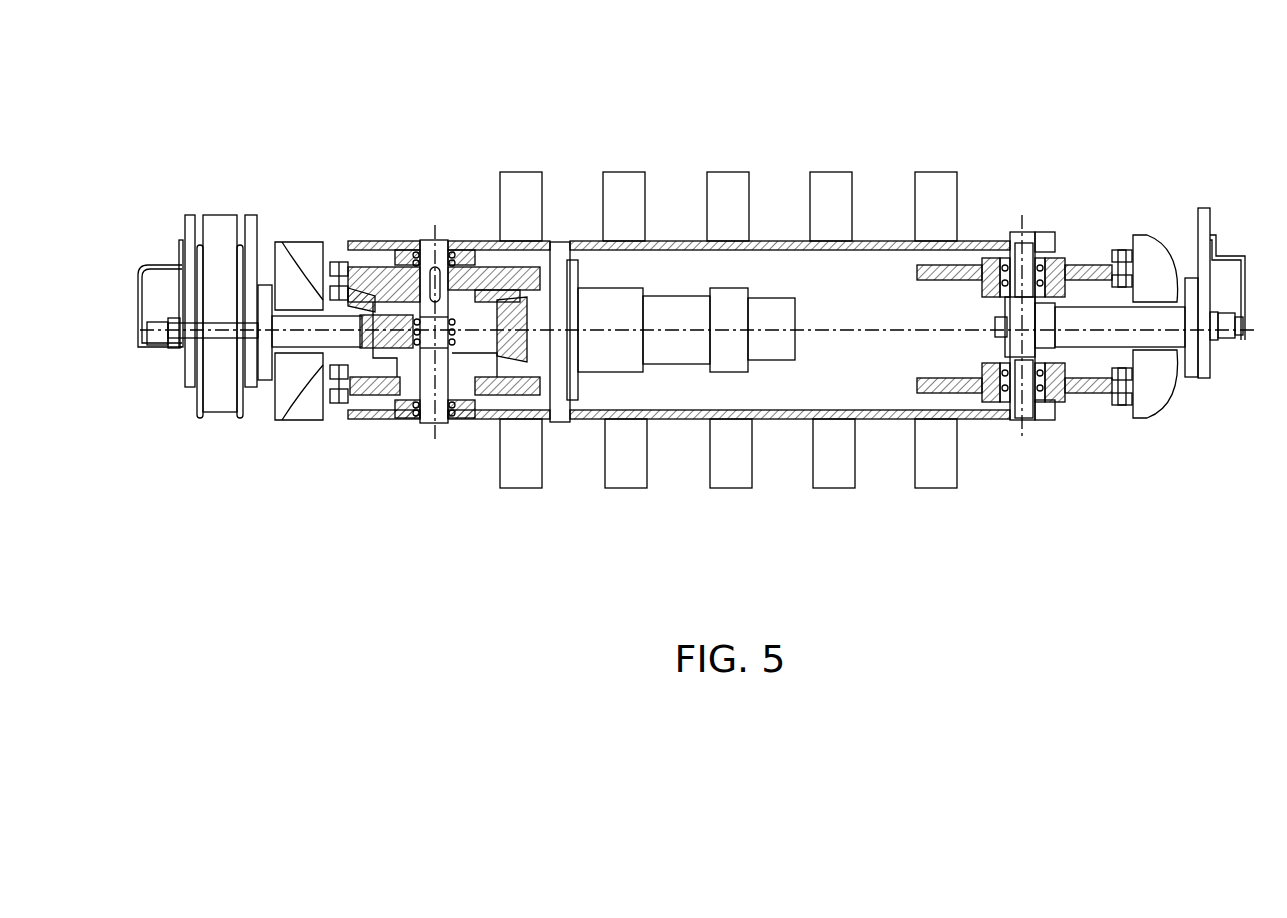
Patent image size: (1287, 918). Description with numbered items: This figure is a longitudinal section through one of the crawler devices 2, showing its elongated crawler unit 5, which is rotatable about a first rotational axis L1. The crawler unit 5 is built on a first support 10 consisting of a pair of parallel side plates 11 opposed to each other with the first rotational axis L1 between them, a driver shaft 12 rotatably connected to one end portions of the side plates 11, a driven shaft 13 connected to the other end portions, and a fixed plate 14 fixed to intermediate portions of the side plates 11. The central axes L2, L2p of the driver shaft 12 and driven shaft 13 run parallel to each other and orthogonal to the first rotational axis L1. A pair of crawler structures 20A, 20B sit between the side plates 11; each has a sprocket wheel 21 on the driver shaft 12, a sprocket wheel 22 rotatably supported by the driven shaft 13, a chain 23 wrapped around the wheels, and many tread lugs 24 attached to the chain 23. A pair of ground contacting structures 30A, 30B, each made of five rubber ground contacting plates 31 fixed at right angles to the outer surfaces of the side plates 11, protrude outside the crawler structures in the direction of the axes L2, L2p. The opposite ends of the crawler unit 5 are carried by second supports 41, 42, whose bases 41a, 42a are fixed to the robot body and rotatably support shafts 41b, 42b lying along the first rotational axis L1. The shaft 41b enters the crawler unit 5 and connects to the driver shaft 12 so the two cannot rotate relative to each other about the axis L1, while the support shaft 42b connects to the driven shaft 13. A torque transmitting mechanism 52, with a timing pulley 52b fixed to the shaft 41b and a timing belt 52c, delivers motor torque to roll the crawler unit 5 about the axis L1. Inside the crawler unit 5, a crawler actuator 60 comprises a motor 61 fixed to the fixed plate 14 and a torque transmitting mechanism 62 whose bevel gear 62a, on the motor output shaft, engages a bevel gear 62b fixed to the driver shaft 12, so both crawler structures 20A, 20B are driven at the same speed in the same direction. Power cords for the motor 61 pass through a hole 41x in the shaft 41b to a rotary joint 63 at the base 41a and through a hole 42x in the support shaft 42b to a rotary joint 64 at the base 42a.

The crawler device 2 is at (1045, 193).
The crawler unit 5 is at (450, 210).
The first support 10 is at (878, 232).
The side plates 11 is at (776, 200).
The driver shaft 12 is at (438, 425).
The driven shaft 13 is at (1022, 425).
The fixed plate 14 is at (556, 262).
The crawler structure 20A is at (972, 412).
The crawler structure 20B is at (972, 238).
The sprocket wheel 21 is at (375, 270).
The sprocket wheel 22 is at (930, 265).
The chain 23 is at (1122, 250).
The tread lugs 24 is at (308, 245).
The ground contacting structure 30A is at (836, 505).
The ground contacting structure 30B is at (727, 155).
The ground contacting plates 31 is at (625, 172).
The second support 41 is at (284, 243).
The base 41a is at (260, 232).
The shaft 41b is at (300, 352).
The hole 41x is at (280, 345).
The second support 42 is at (1206, 395).
The base 42a is at (1212, 218).
The support shaft 42b is at (1090, 348).
The hole 42x is at (1076, 350).
The torque transmitting mechanism 52 is at (220, 435).
The timing pulley 52b is at (198, 414).
The timing belt 52c is at (218, 232).
The crawler actuator 60 is at (690, 272).
The motor 61 is at (683, 345).
The torque transmitting mechanism 62 is at (533, 343).
The bevel gear 62a is at (515, 323).
The bevel gear 62b is at (487, 290).
The rotary joint 63 is at (157, 345).
The rotary joint 64 is at (1224, 345).
The first rotational axis L1 is at (820, 328).
The central axis L2 is at (435, 228).
The central axis L2p is at (1030, 212).